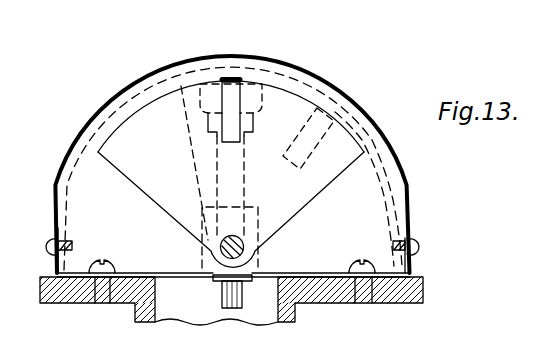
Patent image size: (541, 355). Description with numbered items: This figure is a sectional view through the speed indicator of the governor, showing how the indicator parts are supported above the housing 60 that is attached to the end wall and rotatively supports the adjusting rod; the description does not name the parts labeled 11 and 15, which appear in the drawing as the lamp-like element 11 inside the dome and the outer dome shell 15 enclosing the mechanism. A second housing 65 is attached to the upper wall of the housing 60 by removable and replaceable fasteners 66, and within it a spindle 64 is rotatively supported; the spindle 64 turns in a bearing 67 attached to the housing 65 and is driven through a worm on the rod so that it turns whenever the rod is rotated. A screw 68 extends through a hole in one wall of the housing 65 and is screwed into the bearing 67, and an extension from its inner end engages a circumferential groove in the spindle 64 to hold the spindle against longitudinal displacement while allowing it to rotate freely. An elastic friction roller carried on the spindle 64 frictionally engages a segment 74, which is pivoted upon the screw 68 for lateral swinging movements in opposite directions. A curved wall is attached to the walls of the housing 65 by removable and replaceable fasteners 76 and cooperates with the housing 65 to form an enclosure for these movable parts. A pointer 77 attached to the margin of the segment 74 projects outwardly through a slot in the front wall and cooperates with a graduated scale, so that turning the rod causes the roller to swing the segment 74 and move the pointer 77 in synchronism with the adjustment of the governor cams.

The lamp bulb 11 is at (262, 99).
The dome cover 15 is at (343, 96).
The housing 60 is at (296, 318).
The spindle 64 is at (227, 309).
The housing 65 is at (363, 214).
The removable and replaceable fasteners 66 is at (115, 265).
The bearing 67 is at (210, 274).
The screw 68 is at (220, 247).
The segment 74 is at (150, 199).
The removable and replaceable fasteners 76 is at (45, 254).
The pointer 77 is at (231, 77).